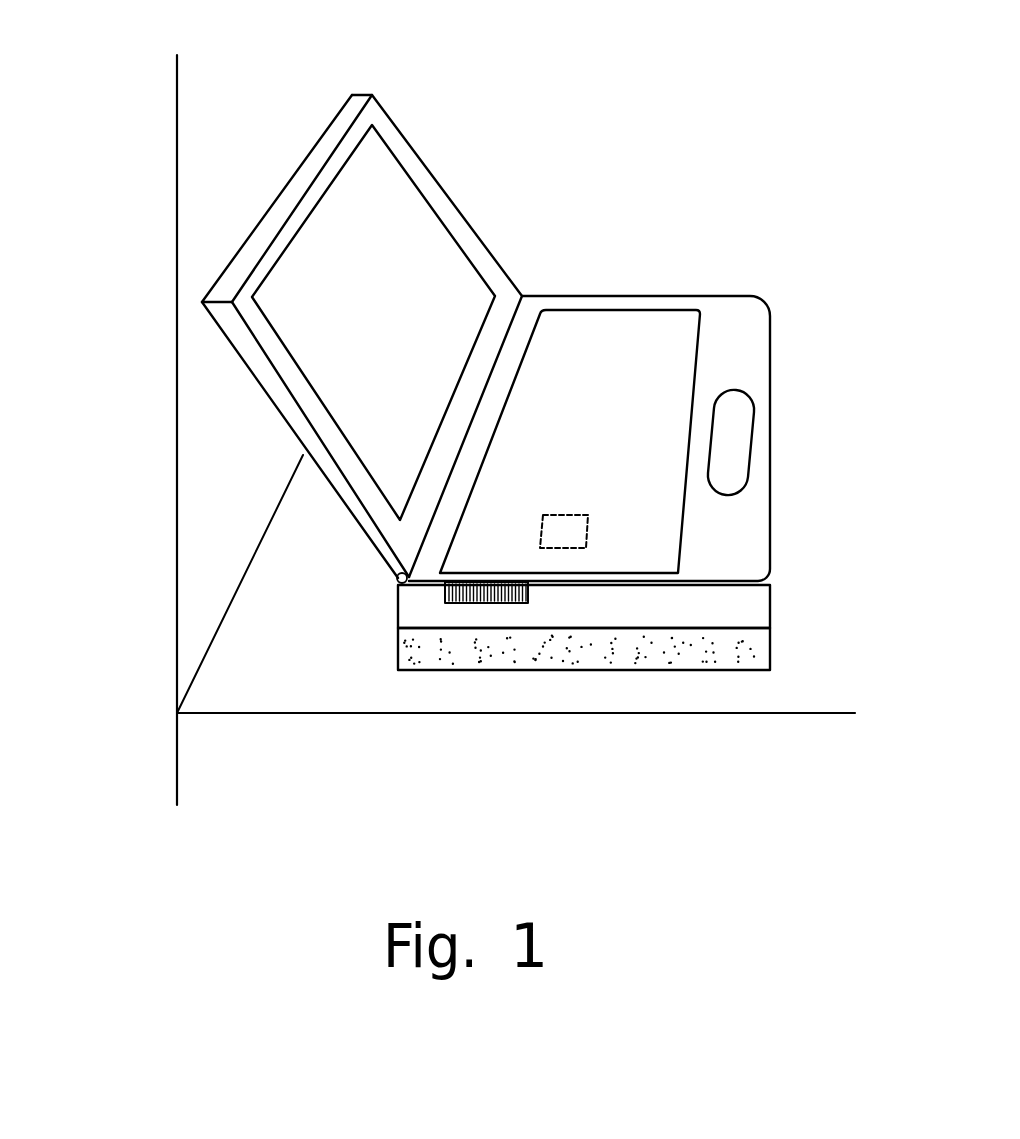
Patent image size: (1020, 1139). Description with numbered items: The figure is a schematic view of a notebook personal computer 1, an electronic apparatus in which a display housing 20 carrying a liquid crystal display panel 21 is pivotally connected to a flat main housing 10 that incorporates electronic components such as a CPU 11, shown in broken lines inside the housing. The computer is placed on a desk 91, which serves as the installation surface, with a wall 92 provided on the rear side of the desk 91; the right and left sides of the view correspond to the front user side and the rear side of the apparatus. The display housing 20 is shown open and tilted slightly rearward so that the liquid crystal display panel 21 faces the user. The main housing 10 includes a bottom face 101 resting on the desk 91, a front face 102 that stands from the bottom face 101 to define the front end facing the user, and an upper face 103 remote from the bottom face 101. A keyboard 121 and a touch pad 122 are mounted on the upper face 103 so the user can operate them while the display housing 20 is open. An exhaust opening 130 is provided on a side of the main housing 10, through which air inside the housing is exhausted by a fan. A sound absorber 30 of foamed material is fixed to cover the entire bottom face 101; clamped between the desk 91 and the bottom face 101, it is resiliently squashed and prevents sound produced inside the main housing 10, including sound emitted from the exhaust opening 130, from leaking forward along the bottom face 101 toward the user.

The notebook personal computer 1 is at (562, 407).
The main housing 10 is at (660, 495).
The CPU 11 is at (570, 550).
The display housing 20 is at (362, 300).
The liquid crystal display panel 21 is at (352, 187).
The sound absorber 30 is at (670, 653).
The desk 91 is at (333, 697).
The wall 92 is at (207, 433).
The bottom face 101 is at (660, 707).
The front face 102 is at (772, 593).
The upper face 103 is at (748, 347).
The keyboard 121 is at (600, 337).
The touch pad 122 is at (737, 435).
The exhaust opening 130 is at (528, 590).